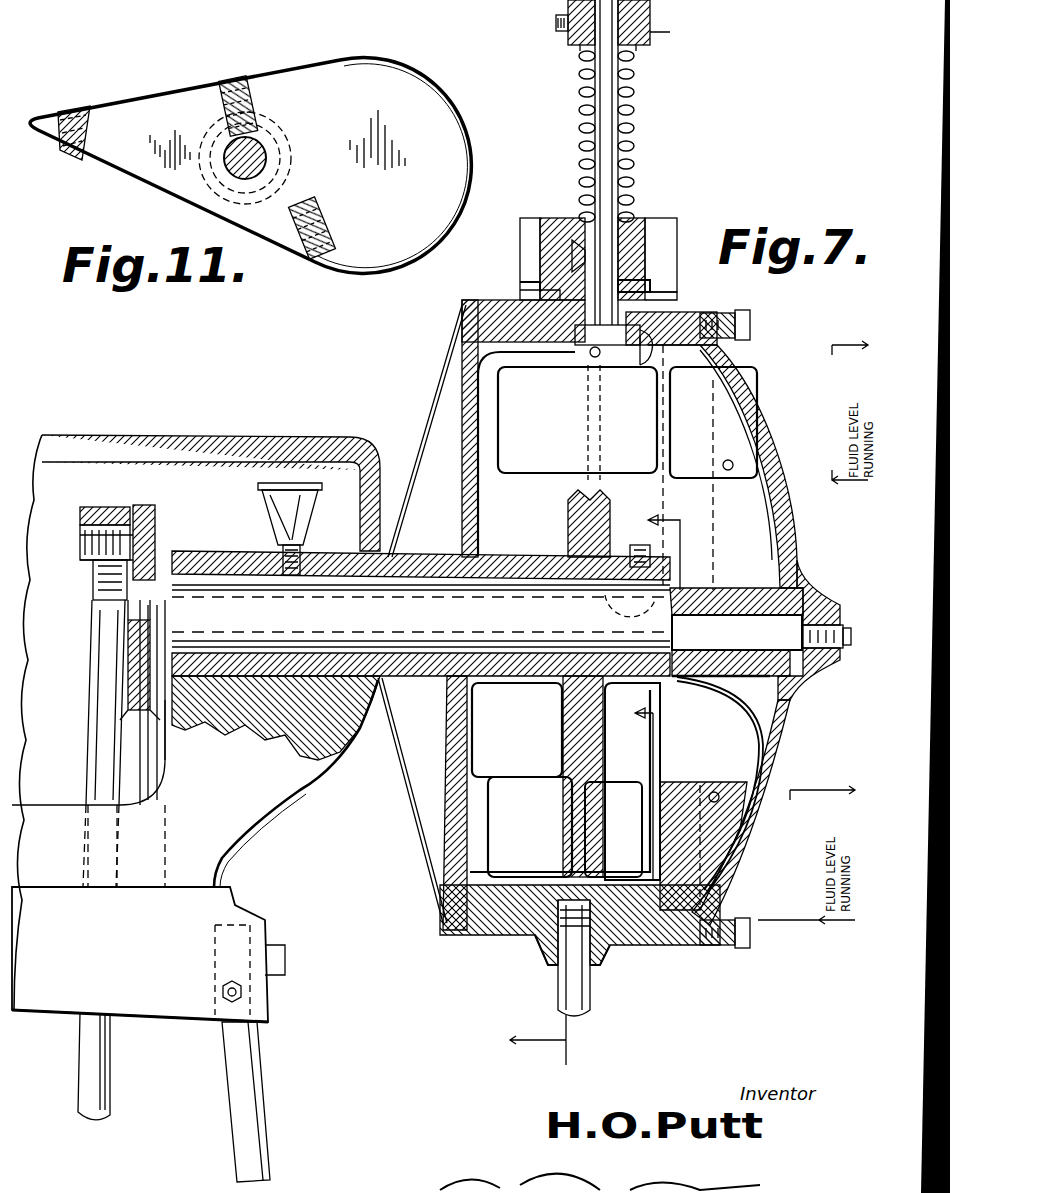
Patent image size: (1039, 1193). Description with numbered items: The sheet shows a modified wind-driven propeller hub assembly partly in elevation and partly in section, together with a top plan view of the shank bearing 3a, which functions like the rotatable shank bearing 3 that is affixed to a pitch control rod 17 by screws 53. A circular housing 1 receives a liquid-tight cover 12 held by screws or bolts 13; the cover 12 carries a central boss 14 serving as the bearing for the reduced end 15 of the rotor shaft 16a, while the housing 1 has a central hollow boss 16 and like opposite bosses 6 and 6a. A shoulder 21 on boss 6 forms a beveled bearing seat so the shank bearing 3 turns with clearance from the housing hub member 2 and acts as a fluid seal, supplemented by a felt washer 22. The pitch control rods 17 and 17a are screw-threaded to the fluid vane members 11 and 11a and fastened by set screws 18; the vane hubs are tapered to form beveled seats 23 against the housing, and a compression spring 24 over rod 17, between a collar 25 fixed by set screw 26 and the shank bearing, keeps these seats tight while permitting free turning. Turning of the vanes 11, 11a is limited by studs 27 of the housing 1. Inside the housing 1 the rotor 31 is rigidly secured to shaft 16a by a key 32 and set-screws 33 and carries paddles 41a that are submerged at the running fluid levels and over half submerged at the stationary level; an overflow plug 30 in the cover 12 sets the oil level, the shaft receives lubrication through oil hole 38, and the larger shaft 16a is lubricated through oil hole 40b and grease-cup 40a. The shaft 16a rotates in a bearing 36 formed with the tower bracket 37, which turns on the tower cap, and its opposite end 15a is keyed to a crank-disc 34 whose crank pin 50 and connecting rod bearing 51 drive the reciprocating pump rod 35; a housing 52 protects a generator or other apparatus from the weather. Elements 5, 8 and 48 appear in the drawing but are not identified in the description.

In FIG. 7, the housing 1 is at (468, 331).
In FIG. 7, the housing hub member 2 is at (615, 948).
In FIG. 7, the rotatable shank bearing 3 is at (662, 240).
In FIG. 11, the shank bearing 3a is at (455, 155).
In FIG. 11, the screw 5 is at (313, 240).
In FIG. 7, the boss 6 is at (625, 283).
In FIG. 7, the boss 6a is at (545, 965).
In FIG. 7, the axis line 8 is at (549, 1040).
In FIG. 7, the fluid vane member 11 is at (700, 462).
In FIG. 7, the fluid vane member 11a is at (678, 782).
In FIG. 7, the cover 12 is at (765, 438).
In FIG. 7, the screws or bolts 13 is at (752, 328).
In FIG. 7, the hollow shaft or boss 14 is at (685, 680).
In FIG. 7, the reduced end of rotor shaft 15 is at (745, 600).
In FIG. 7, the opposite end of shaft 15a is at (128, 614).
In FIG. 7, the hollow shaft or boss 16 is at (432, 680).
In FIG. 7, the rotor shaft 16a is at (425, 595).
In FIG. 11, the pitch control rod 17 is at (262, 156).
In FIG. 7, the pitch control rod 17 is at (605, 172).
In FIG. 7, the pitch control rod 17a is at (592, 1005).
In FIG. 7, the set screws 18 is at (592, 357).
In FIG. 7, the shoulder or beveled bearing seat 21 is at (545, 275).
In FIG. 7, the felt washer 22 is at (580, 250).
In FIG. 7, the beveled seat 23 is at (638, 370).
In FIG. 7, the compression spring 24 is at (634, 126).
In FIG. 7, the collar 25 is at (650, 32).
In FIG. 7, the set screw 26 is at (556, 25).
In FIG. 7, the studs 27 is at (478, 376).
In FIG. 7, the overflow plug 30 is at (848, 632).
In FIG. 7, the rotor 31 is at (568, 515).
In FIG. 7, the key 32 is at (640, 598).
In FIG. 7, the set-screws 33 is at (648, 545).
In FIG. 7, the crank-disc 34 is at (155, 520).
In FIG. 7, the reciprocating pump rod 35 is at (95, 740).
In FIG. 7, the bearing 36 is at (360, 738).
In FIG. 7, the tower bracket 37 is at (245, 805).
In FIG. 7, the oil hole 38 is at (800, 585).
In FIG. 7, the grease-cup 40a is at (280, 512).
In FIG. 7, the oil hole 40b is at (540, 572).
In FIG. 7, the vanes or paddles 41a is at (522, 470).
In FIG. 7, the bushing 48 is at (150, 597).
In FIG. 7, the crank pin 50 is at (112, 520).
In FIG. 7, the connecting rod bearing 51 is at (120, 520).
In FIG. 7, the housing 52 is at (212, 440).
In FIG. 11, the screws 53 is at (238, 85).